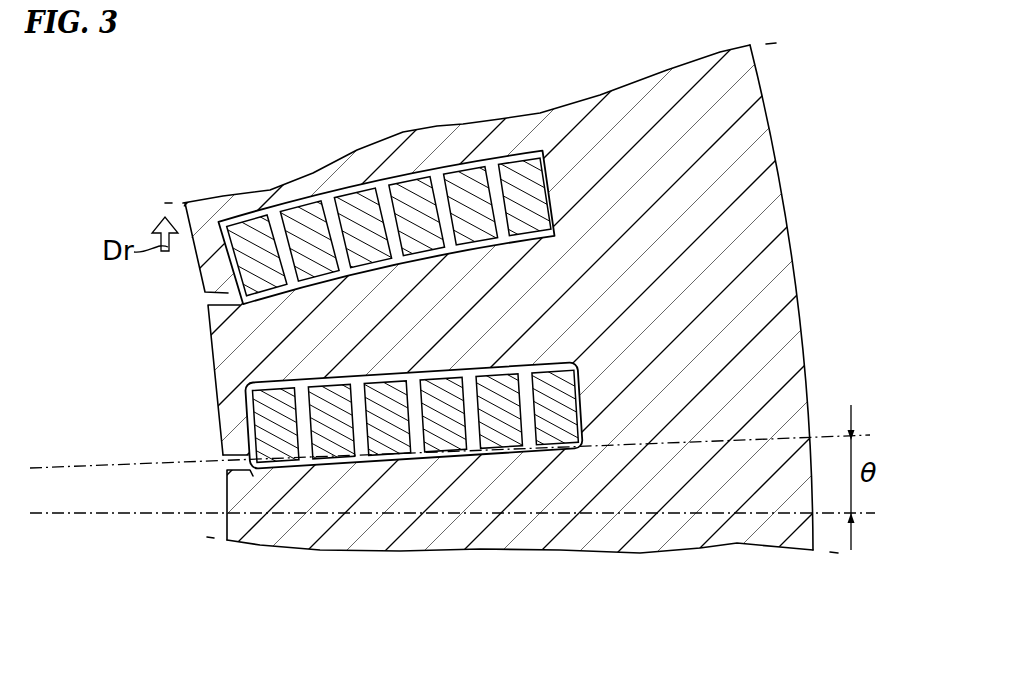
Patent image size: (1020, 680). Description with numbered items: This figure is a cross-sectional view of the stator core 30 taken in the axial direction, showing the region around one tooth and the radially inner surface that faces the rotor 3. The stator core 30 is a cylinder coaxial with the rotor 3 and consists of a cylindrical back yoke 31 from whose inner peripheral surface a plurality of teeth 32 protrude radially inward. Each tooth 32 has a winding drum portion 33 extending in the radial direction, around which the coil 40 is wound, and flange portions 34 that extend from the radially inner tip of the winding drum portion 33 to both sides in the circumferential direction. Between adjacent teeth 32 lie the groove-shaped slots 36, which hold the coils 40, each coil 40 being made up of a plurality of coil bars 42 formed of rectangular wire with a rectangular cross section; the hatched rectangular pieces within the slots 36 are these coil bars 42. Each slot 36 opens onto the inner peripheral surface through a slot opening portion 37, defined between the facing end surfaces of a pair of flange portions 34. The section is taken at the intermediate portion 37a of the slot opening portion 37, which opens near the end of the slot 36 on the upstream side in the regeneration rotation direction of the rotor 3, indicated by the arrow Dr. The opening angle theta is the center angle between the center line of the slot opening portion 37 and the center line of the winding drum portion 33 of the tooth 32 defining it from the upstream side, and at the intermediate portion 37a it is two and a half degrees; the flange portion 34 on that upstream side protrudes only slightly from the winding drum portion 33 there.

The rotor 3 is at (818, 80).
The stator core 30 is at (784, 172).
The back yoke 31 is at (770, 292).
The teeth 32 is at (78, 320).
The winding drum portion 33 is at (273, 340).
The flange portions 34 is at (220, 310).
The slots 36 is at (500, 440).
The slot opening portions 37 is at (178, 539).
The intermediate portions 37a is at (236, 466).
The coil 40 is at (415, 505).
The coil bars 42 is at (385, 440).